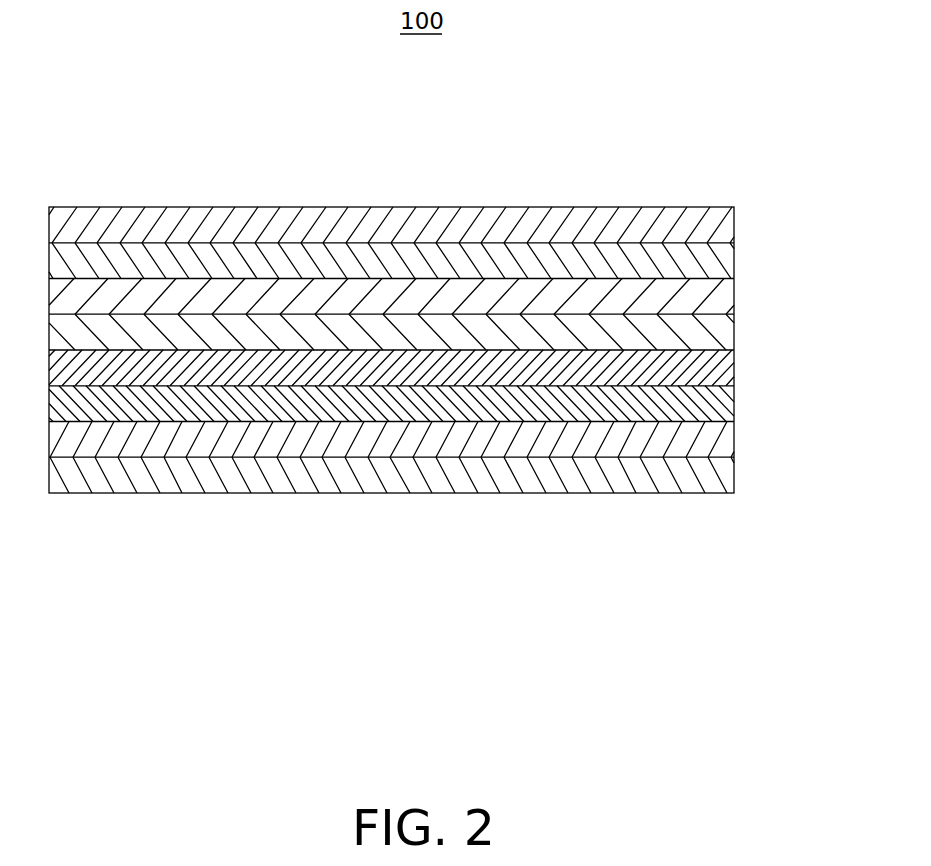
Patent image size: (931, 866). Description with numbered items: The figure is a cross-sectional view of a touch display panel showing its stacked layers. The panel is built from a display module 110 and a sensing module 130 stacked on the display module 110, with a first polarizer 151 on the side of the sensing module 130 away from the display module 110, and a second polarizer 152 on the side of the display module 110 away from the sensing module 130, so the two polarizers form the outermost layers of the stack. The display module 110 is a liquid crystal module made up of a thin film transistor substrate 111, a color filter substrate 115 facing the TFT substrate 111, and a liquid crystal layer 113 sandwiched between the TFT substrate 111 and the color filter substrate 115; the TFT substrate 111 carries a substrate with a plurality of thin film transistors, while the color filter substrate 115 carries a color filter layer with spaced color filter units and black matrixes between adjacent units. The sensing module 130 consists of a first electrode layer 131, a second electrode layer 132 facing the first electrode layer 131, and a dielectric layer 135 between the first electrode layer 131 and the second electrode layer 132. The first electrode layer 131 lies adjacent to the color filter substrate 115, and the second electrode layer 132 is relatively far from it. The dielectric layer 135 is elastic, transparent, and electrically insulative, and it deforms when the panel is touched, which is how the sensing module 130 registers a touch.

The first polarizer 151 is at (722, 228).
The sensing module 130 is at (458, 296).
The second electrode layer 132 is at (723, 258).
The dielectric layer 135 is at (725, 299).
The first electrode layer 131 is at (723, 336).
The display module 110 is at (458, 403).
The color filter substrate 115 is at (727, 372).
The liquid crystal layer 113 is at (723, 407).
The TFT substrate 111 is at (723, 445).
The second polarizer 152 is at (723, 483).